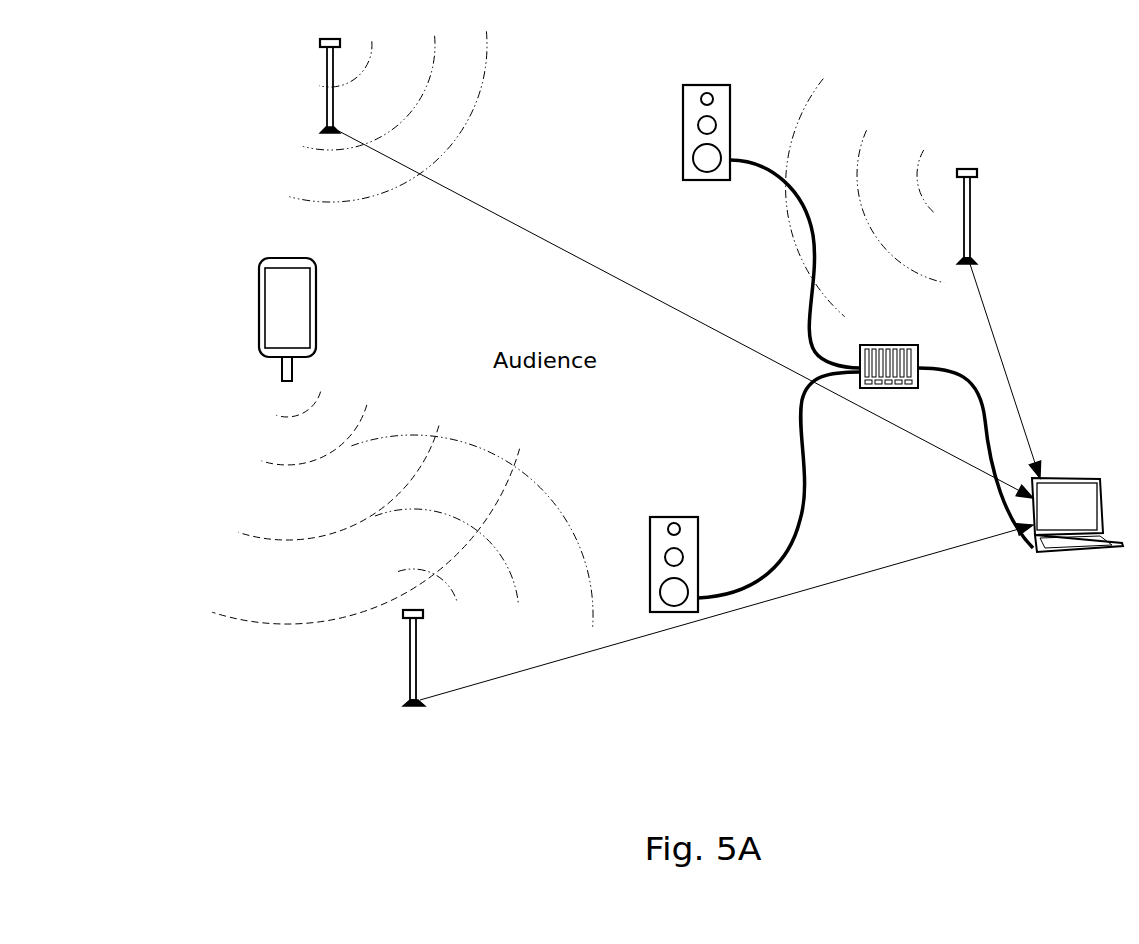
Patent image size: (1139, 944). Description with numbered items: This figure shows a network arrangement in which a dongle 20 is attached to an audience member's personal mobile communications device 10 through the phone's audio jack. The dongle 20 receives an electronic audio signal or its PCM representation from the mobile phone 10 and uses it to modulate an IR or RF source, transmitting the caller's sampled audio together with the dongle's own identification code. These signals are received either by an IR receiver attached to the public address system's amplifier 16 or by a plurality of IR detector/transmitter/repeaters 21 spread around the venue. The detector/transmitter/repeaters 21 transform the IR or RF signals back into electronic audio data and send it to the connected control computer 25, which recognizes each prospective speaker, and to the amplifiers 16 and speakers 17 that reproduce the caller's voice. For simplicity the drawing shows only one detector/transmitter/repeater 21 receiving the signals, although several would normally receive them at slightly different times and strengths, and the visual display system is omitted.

The personal mobile communications device 10 is at (317, 303).
The dongle 20 is at (293, 371).
The detector/transmitter/repeater 21 is at (337, 97).
The speaker 17 is at (683, 112).
The amplifier 16 is at (887, 345).
The control computer 25 is at (1078, 553).